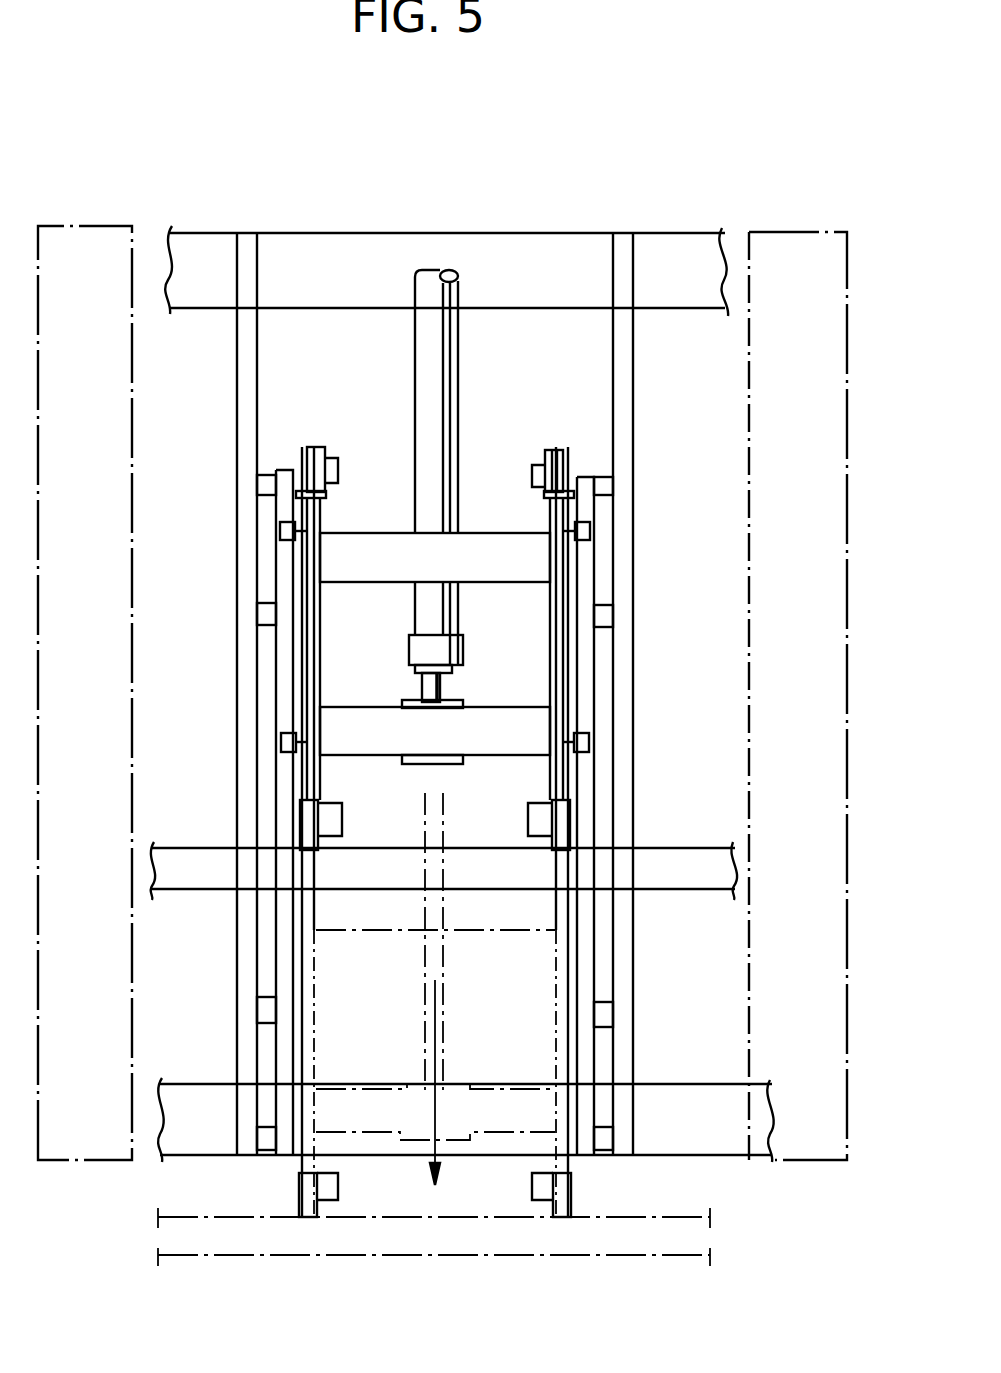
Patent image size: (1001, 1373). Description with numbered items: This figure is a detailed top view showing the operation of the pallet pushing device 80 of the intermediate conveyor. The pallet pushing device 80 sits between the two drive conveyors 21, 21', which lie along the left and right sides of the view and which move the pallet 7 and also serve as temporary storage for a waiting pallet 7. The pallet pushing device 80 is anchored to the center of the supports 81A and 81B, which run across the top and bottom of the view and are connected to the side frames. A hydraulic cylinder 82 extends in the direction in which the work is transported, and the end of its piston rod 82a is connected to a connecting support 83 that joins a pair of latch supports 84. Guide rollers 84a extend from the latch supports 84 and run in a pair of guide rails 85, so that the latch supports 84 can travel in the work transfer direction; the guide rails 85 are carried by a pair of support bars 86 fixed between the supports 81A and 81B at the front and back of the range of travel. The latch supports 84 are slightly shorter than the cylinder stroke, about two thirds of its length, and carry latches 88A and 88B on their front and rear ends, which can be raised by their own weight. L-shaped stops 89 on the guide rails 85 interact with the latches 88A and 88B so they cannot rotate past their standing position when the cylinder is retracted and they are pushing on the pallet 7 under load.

The support 81A is at (320, 236).
The support 81B is at (192, 1096).
The hydraulic cylinder 82 is at (455, 397).
The piston rod 82a is at (443, 690).
The connecting support 83 is at (390, 757).
The latch support 84 is at (317, 660).
The guide roller 84a is at (278, 531).
The guide rail 85 is at (283, 970).
The support bar 86 is at (243, 903).
The latch 88A is at (590, 499).
The latch 88B is at (296, 832).
The L-shaped stop 89 is at (540, 465).
The pallet pushing device 80 is at (508, 993).
The pallet 7 is at (661, 864).
The drive conveyor 21 is at (85, 693).
The drive conveyor 21' is at (798, 696).